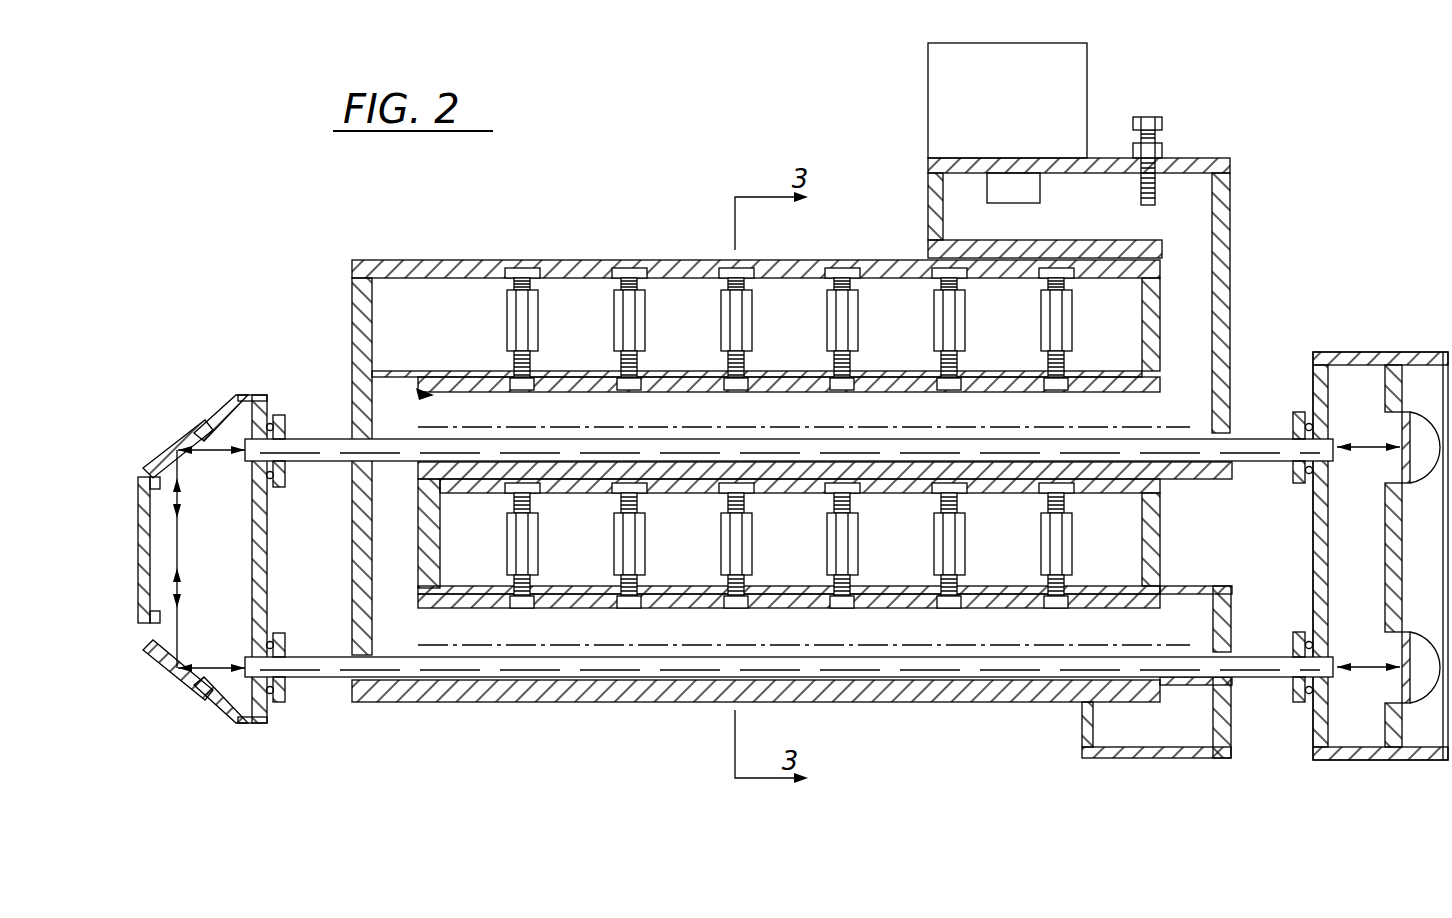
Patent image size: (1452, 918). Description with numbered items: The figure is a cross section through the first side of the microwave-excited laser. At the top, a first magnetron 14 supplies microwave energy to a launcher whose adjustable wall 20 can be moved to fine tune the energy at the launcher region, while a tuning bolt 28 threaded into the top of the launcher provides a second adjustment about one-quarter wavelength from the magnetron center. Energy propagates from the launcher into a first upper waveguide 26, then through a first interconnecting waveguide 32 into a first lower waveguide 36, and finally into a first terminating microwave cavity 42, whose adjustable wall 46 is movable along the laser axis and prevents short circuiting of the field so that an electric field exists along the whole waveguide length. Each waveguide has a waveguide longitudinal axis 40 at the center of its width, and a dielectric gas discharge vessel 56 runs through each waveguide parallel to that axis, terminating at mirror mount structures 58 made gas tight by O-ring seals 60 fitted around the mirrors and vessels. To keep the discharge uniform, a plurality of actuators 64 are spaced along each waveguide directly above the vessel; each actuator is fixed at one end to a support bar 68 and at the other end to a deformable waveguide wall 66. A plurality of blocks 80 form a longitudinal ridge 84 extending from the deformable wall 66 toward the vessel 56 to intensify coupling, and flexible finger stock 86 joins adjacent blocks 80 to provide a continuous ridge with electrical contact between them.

The first magnetron 14 is at (1073, 78).
The adjustable wall 20 is at (928, 205).
The first upper waveguide 26 is at (795, 410).
The tuning bolt 28 is at (1150, 117).
The first interconnecting waveguide 32 is at (380, 570).
The first lower waveguide 36 is at (862, 640).
The waveguide longitudinal axis 40 is at (480, 428).
The first terminating microwave cavity 42 is at (1162, 730).
The adjustable wall 46 is at (1082, 728).
The dielectric gas discharge vessel 56 is at (287, 470).
The mirror mount structure 58 is at (1373, 352).
The O-ring seal 60 is at (274, 482).
The actuator 64 is at (637, 312).
The deformable waveguide wall 66 is at (588, 372).
The support bar 68 is at (372, 262).
The block 80 is at (440, 385).
The longitudinal ridge 84 is at (420, 395).
The finger stock 86 is at (632, 392).